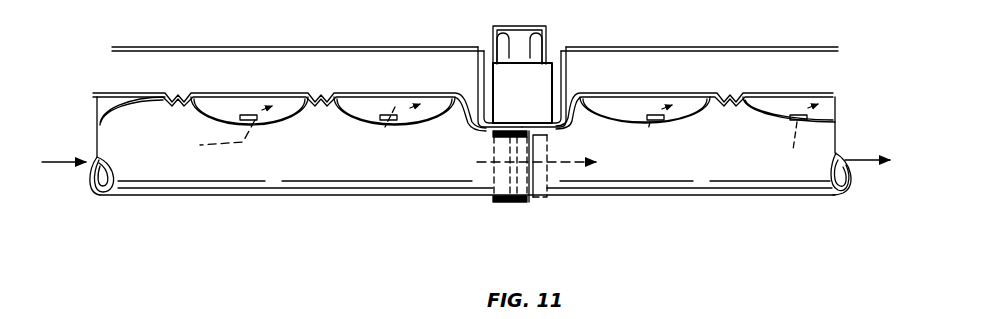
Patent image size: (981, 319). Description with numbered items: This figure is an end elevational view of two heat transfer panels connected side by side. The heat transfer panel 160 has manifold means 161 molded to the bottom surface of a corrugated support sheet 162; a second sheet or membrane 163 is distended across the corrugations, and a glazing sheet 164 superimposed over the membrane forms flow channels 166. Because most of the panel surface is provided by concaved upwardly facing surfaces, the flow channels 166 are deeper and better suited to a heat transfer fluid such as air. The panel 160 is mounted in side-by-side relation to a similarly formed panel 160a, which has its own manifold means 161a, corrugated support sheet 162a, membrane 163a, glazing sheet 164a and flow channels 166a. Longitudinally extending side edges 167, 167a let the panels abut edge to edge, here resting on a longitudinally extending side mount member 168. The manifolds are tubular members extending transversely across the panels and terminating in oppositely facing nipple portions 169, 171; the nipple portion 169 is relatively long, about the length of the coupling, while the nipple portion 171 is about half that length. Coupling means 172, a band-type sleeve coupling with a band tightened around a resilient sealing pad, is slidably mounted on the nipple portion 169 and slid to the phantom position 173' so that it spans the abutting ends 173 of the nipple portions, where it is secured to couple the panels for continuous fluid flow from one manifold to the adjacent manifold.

The heat transfer panel 160 is at (248, 206).
The panel 160a is at (747, 208).
The manifold means 161 is at (343, 190).
The manifold means 161a is at (689, 210).
The corrugated support sheet 162 is at (215, 107).
The corrugated support sheet 162a is at (781, 120).
The second sheet or membrane 163 is at (363, 93).
The second sheet or membrane 163a is at (790, 92).
The glazing sheet 164 is at (243, 48).
The glazing sheet 164a is at (727, 48).
The flow channels 166 is at (117, 103).
The flow channels 166a is at (633, 103).
The side edge 167 is at (478, 82).
The side edge 167a is at (567, 50).
The side mount member 168 is at (548, 52).
The nipple portion 169 is at (492, 194).
The nipple portion 171 is at (548, 197).
The coupling means 172 is at (533, 200).
The abutting ends 173 is at (503, 171).
The clip passage 173' is at (584, 143).